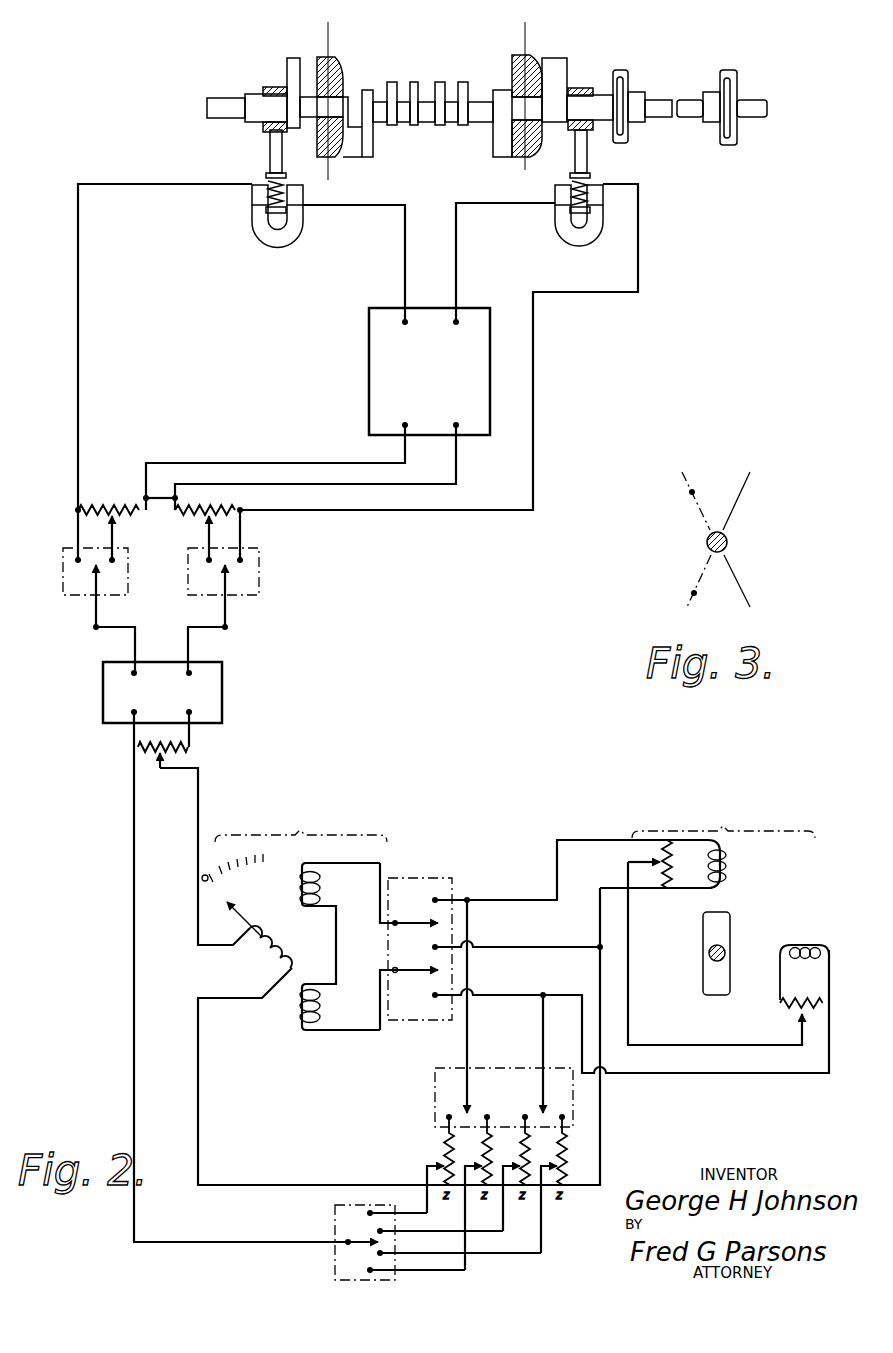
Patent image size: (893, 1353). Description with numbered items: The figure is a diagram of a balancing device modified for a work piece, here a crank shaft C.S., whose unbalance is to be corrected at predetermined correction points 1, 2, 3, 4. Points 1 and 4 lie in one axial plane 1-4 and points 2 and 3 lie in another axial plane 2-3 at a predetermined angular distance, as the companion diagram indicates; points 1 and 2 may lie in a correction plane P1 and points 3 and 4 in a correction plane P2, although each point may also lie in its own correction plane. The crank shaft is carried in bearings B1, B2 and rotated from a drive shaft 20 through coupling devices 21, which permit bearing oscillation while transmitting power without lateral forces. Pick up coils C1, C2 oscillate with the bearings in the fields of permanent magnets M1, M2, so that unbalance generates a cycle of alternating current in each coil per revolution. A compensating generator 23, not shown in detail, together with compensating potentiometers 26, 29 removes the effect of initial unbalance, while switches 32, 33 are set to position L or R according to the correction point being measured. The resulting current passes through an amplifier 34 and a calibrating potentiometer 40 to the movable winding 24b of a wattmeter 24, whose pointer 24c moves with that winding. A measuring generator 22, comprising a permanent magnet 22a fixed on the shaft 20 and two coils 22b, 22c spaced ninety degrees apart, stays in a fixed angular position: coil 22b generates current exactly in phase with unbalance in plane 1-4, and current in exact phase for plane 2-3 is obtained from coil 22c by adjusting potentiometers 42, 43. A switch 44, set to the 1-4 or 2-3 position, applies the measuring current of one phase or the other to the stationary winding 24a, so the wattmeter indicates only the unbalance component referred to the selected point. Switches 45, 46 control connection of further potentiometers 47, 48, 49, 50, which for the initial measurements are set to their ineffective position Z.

In FIG. 2, the correction plane P1 is at (318, 93).
In FIG. 2, the correction plane P2 is at (515, 87).
In FIG. 2, the correction point 1 is at (336, 68).
In FIG. 2, the correction point 2 is at (323, 140).
In FIG. 2, the correction point 3 is at (533, 140).
In FIG. 2, the correction point 4 is at (520, 72).
In FIG. 2, the bearing B1 is at (276, 87).
In FIG. 2, the bearing B2 is at (584, 88).
In FIG. 2, the crank shaft C.S. is at (436, 125).
In FIG. 2, the drive shaft 20 is at (762, 112).
In FIG. 2, the coupling devices 21 is at (727, 70).
In FIG. 2, the pick up coil C1 is at (264, 182).
In FIG. 2, the pick up coil C2 is at (592, 182).
In FIG. 2, the permanent magnet M1 is at (264, 238).
In FIG. 2, the permanent magnet M2 is at (594, 236).
In FIG. 2, the compensating generator 23 is at (388, 376).
In FIG. 2, the compensating potentiometer 26 is at (111, 500).
In FIG. 2, the compensating potentiometer 29 is at (184, 516).
In FIG. 2, the switch 32 is at (63, 573).
In FIG. 2, the switch 33 is at (258, 585).
In FIG. 2, the amplifier 34 is at (120, 698).
In FIG. 2, the calibrating potentiometer 40 is at (150, 752).
In FIG. 2, the wattmeter 24 is at (291, 916).
In FIG. 2, the stationary winding 24a is at (320, 890).
In FIG. 2, the movable winding 24b is at (273, 944).
In FIG. 2, the pointer 24c is at (240, 917).
In FIG. 2, the switch 44 is at (428, 1049).
In FIG. 2, the measuring generator 22 is at (730, 903).
In FIG. 2, the permanent magnet 22a is at (705, 938).
In FIG. 2, the coil 22b is at (727, 870).
In FIG. 2, the coil 22c is at (805, 946).
In FIG. 2, the potentiometer 42 is at (662, 864).
In FIG. 2, the potentiometer 43 is at (818, 993).
In FIG. 2, the switch 46 is at (435, 1098).
In FIG. 2, the potentiometer 47 is at (444, 1158).
In FIG. 2, the potentiometer 48 is at (519, 1160).
In FIG. 2, the potentiometer 49 is at (557, 1160).
In FIG. 2, the potentiometer 50 is at (481, 1158).
In FIG. 2, the switch 45 is at (335, 1260).
In FIG. 3, the axial plane 1-4 is at (718, 471).
In FIG. 3, the axial plane 2-3 is at (694, 593).